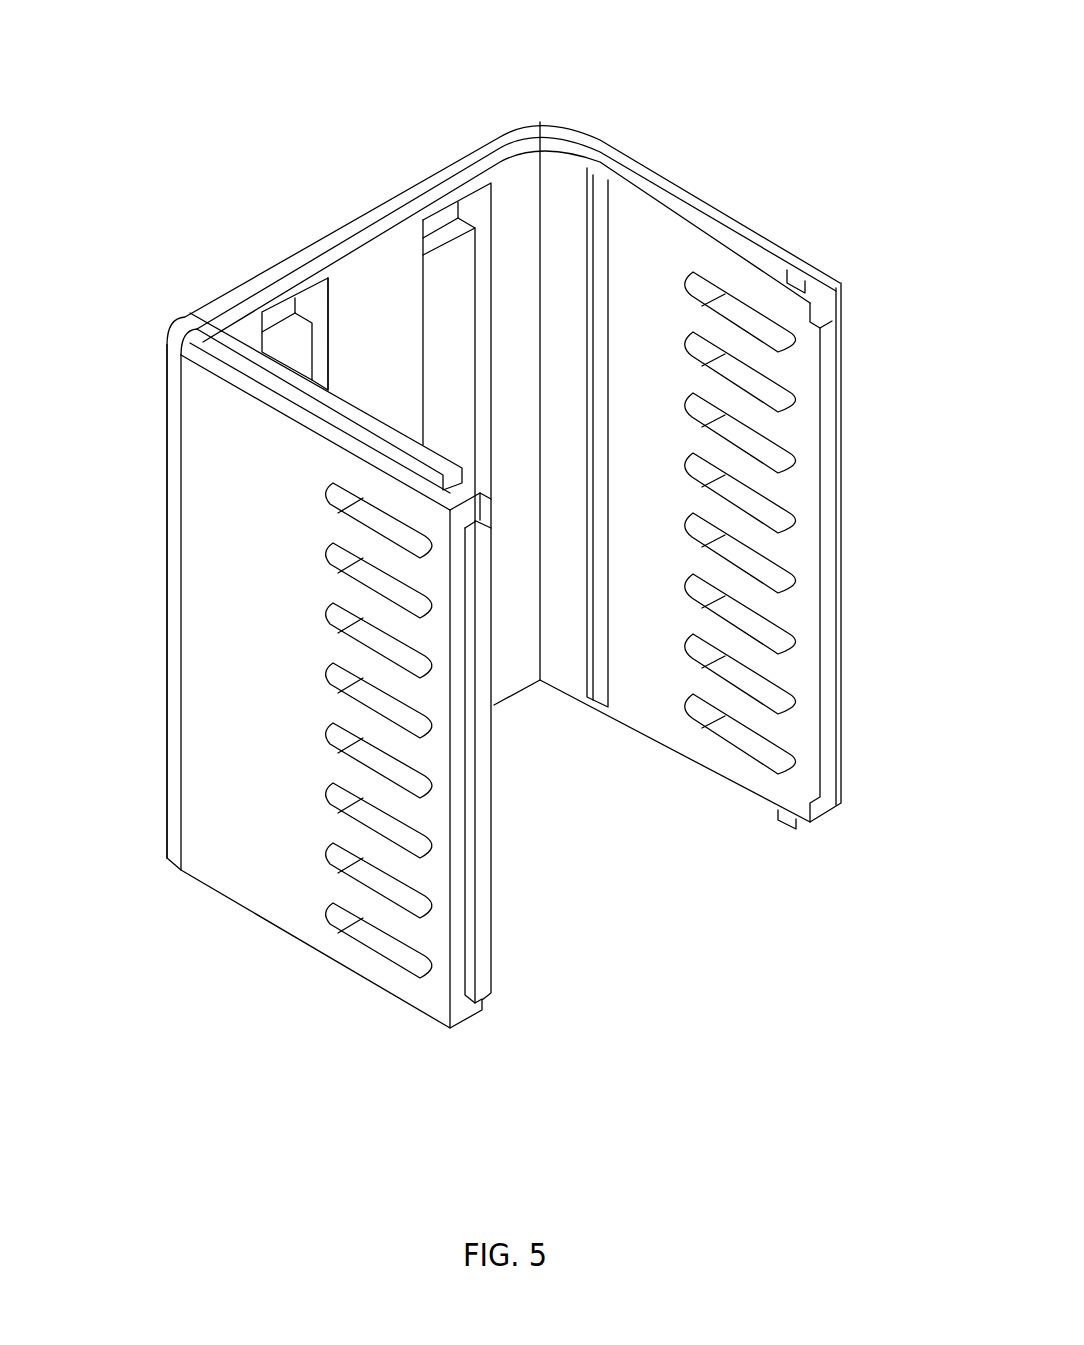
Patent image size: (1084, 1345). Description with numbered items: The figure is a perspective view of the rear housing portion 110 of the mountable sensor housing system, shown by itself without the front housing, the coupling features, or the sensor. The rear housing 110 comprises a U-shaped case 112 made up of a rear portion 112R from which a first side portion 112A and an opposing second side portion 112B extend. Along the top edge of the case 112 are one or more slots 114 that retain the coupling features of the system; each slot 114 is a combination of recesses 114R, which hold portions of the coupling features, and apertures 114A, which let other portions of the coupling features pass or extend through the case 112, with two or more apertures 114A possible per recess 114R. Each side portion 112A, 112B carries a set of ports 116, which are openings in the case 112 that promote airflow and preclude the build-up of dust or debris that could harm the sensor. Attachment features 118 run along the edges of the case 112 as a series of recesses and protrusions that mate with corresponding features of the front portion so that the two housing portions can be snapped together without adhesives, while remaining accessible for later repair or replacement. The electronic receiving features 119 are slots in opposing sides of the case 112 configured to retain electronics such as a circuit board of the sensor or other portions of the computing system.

The rear housing portion 110 is at (152, 552).
The U-shaped case 112 is at (672, 769).
The first side portion 112A is at (223, 833).
The second side portion 112B is at (735, 280).
The rear portion 112R is at (512, 653).
The slots 114 is at (322, 244).
The apertures 114A is at (423, 230).
The recesses 114R is at (307, 343).
The ports 116 is at (792, 727).
The attachment features 118 is at (208, 306).
The electronic receiving features 119 is at (608, 217).